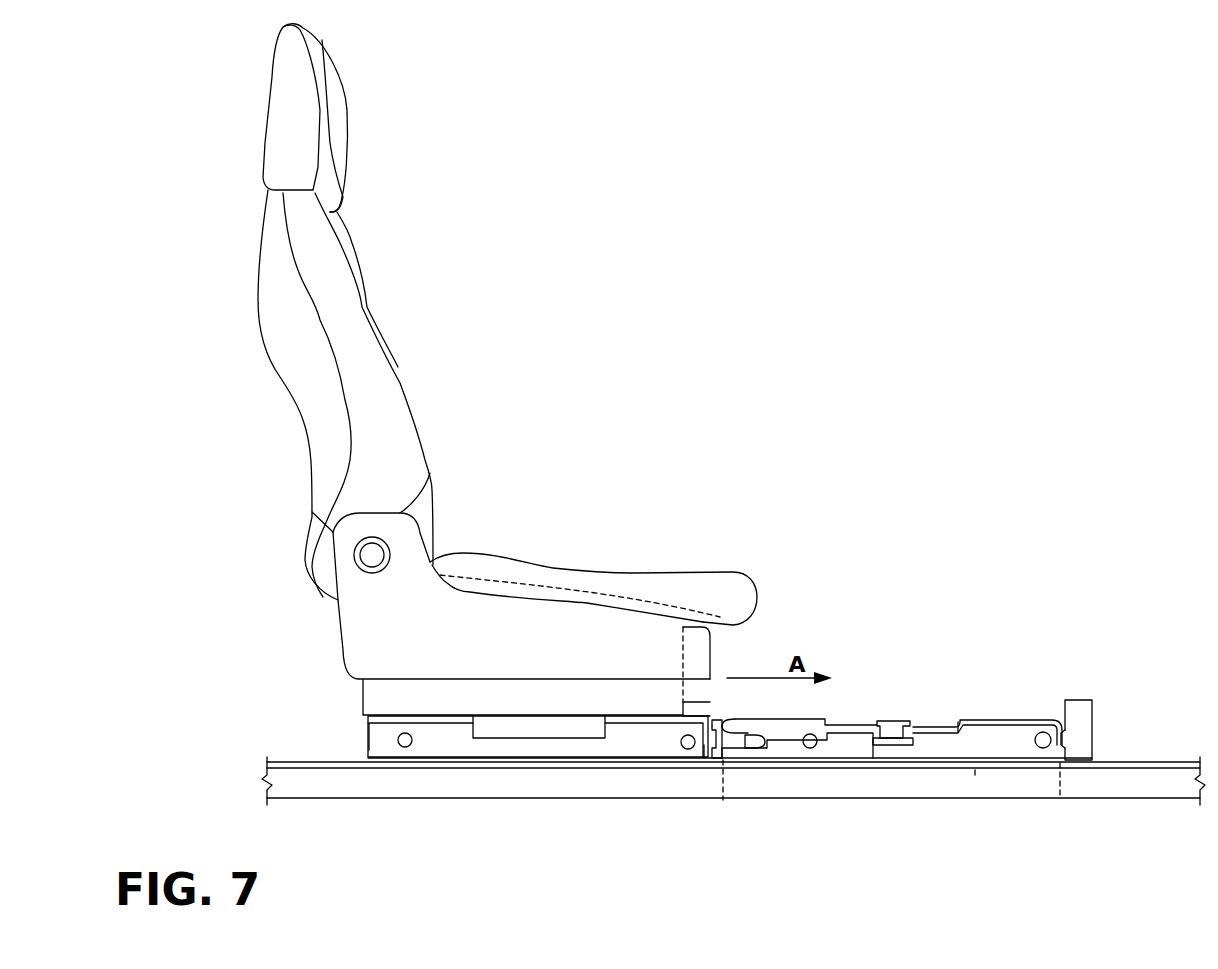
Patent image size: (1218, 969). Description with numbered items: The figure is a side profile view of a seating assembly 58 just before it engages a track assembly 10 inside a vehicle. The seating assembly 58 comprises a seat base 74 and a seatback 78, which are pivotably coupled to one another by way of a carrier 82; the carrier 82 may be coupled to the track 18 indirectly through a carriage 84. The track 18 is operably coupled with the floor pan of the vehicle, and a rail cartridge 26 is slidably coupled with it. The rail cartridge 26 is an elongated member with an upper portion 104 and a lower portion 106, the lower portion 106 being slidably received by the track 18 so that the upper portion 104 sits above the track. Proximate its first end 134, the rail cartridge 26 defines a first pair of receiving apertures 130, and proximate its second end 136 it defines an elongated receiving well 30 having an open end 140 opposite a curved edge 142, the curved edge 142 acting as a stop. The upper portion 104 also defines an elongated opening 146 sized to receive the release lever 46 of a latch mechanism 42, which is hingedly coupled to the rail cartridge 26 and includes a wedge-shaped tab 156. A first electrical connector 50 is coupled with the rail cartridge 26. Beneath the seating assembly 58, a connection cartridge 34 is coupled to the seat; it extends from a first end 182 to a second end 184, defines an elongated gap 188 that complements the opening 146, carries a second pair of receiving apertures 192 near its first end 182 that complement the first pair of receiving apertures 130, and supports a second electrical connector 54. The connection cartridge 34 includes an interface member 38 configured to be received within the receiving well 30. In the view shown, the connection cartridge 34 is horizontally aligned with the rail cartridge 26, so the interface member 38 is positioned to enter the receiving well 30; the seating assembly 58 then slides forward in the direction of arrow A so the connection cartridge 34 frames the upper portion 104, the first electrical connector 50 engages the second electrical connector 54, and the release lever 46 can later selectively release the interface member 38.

The track assembly 10 is at (1087, 674).
The track 18 is at (467, 785).
The rail cartridge 26 is at (992, 740).
The receiving well 30 is at (747, 720).
The connection cartridge 34 is at (620, 740).
The interface member 38 is at (405, 748).
The latch mechanism 42 is at (880, 746).
The release lever 46 is at (886, 721).
The first electrical connector 50 is at (1080, 728).
The second electrical connector 54 is at (686, 627).
The seating assembly 58 is at (436, 174).
The seat base 74 is at (632, 593).
The seatback 78 is at (383, 380).
The carrier 82 is at (373, 643).
The carriage 84 is at (383, 700).
The upper portion 104 is at (962, 712).
The lower portion 106 is at (975, 775).
The first pair of receiving apertures 130 is at (1046, 720).
The first end 134 is at (1062, 742).
The second end 136 is at (712, 762).
The open end 140 is at (713, 720).
The curved edge 142 is at (766, 749).
The opening 146 is at (903, 746).
The tab 156 is at (750, 750).
The first end 182 is at (688, 750).
The second end 184 is at (372, 724).
The gap 188 is at (528, 722).
The second pair of receiving apertures 192 is at (680, 748).